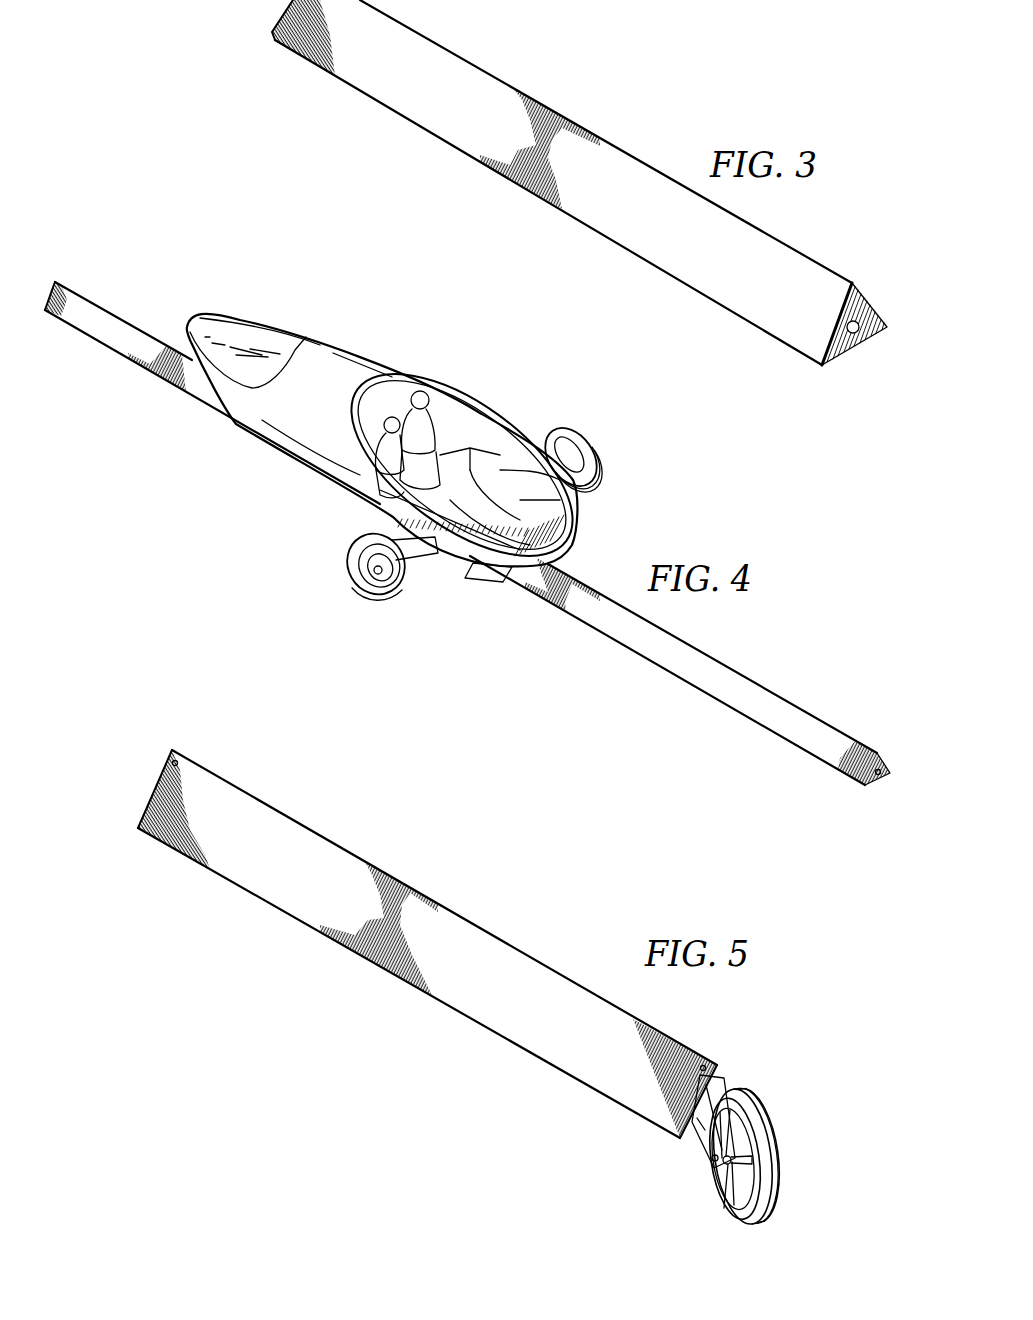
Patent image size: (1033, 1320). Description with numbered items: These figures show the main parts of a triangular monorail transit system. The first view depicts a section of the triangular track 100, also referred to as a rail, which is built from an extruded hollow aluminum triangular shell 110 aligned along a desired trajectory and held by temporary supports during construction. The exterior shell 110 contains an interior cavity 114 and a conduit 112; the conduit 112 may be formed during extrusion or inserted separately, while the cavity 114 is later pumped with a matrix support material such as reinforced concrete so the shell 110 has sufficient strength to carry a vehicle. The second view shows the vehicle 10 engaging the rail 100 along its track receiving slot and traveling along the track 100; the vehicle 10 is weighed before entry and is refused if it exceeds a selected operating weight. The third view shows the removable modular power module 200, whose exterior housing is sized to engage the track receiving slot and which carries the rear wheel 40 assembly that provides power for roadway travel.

In FIG. 4, the vehicle 10 is at (512, 416).
In FIG. 3, the track 100 is at (405, 126).
In FIG. 4, the track 100 is at (641, 664).
In FIG. 3, the extruded triangular shell 110 is at (692, 283).
In FIG. 3, the conduit 112 is at (840, 320).
In FIG. 3, the interior cavity 114 is at (858, 314).
In FIG. 5, the modular power module 200 is at (256, 900).
In FIG. 5, the rear wheel 40 is at (737, 1228).